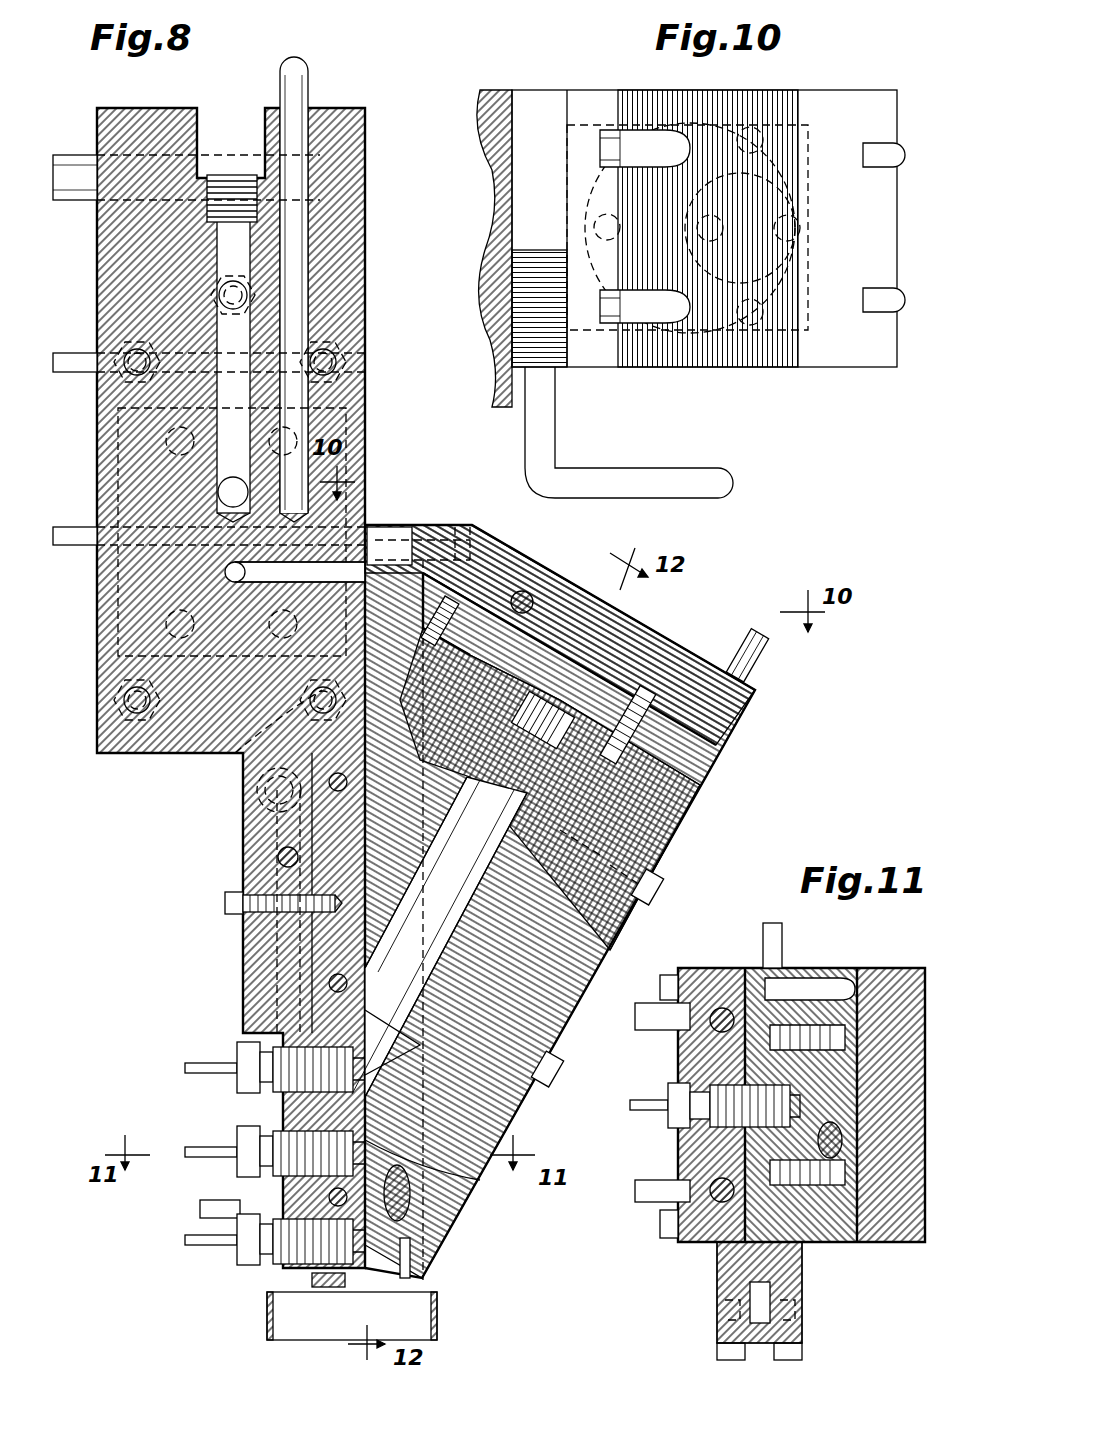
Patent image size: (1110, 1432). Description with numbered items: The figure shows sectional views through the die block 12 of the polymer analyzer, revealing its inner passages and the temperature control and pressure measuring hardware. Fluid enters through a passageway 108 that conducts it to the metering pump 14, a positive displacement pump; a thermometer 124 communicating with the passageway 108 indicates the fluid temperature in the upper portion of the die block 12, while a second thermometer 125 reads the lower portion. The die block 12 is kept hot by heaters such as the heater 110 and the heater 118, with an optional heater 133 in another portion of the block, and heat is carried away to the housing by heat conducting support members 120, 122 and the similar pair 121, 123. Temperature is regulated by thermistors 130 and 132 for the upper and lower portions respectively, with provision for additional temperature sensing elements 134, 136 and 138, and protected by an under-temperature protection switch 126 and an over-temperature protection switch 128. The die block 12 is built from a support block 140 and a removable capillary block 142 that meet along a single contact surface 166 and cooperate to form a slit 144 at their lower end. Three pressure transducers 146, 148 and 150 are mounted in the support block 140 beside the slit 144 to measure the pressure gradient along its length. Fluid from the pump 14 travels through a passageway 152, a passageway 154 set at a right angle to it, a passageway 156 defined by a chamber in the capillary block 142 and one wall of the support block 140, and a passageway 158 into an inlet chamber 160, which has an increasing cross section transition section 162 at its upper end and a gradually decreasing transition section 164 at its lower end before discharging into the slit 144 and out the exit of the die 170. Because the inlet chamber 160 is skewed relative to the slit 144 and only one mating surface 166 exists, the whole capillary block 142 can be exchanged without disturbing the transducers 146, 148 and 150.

In FIG. 8, the die block 12 is at (128, 850).
In FIG. 10, the die block 12 is at (600, 40).
In FIG. 11, the die block 12 is at (645, 1268).
In FIG. 8, the metering pump 14 is at (345, 422).
In FIG. 8, the passageway 108 is at (218, 470).
In FIG. 8, the heater 110 is at (70, 160).
In FIG. 8, the heater 118 is at (265, 942).
In FIG. 11, the heater 118 is at (652, 1202).
In FIG. 8, the support member 120 is at (126, 350).
In FIG. 8, the support member 121 is at (346, 348).
In FIG. 8, the support member 122 is at (120, 700).
In FIG. 8, the support member 123 is at (205, 753).
In FIG. 8, the thermometer 124 is at (306, 72).
In FIG. 8, the thermometer 125 is at (400, 1192).
In FIG. 10, the thermometer 125 is at (650, 482).
In FIG. 11, the thermometer 125 is at (845, 1140).
In FIG. 8, the under-temperature protection switch 126 is at (208, 295).
In FIG. 8, the over-temperature protection switch 128 is at (260, 828).
In FIG. 8, the thermistor 130 is at (88, 548).
In FIG. 8, the thermistor 132 is at (330, 1197).
In FIG. 11, the thermistor 132 is at (775, 925).
In FIG. 8, the heater 133 is at (762, 652).
In FIG. 10, the heater 133 is at (900, 148).
In FIG. 8, the temperature sensing element 134 is at (88, 374).
In FIG. 8, the temperature sensing element 136 is at (332, 800).
In FIG. 8, the temperature sensing element 138 is at (330, 983).
In FIG. 8, the support block 140 is at (128, 757).
In FIG. 10, the support block 140 is at (492, 207).
In FIG. 11, the support block 140 is at (725, 1258).
In FIG. 8, the capillary block 142 is at (710, 745).
In FIG. 10, the capillary block 142 is at (872, 362).
In FIG. 11, the capillary block 142 is at (905, 975).
In FIG. 8, the slit 144 is at (425, 1175).
In FIG. 11, the slit 144 is at (800, 1090).
In FIG. 8, the pressure transducer 146 is at (235, 1052).
In FIG. 8, the pressure transducer 148 is at (235, 1132).
In FIG. 11, the pressure transducer 148 is at (668, 1127).
In FIG. 8, the pressure transducer 150 is at (232, 1264).
In FIG. 8, the passageway 152 is at (225, 572).
In FIG. 8, the passageway 154 is at (350, 530).
In FIG. 8, the passageway 156 is at (400, 562).
In FIG. 8, the passageway 158 is at (470, 660).
In FIG. 8, the inlet chamber 160 is at (460, 903).
In FIG. 8, the transition section 162 is at (520, 785).
In FIG. 8, the transition section 164 is at (440, 1010).
In FIG. 8, the contact surface 166 is at (372, 828).
In FIG. 10, the contact surface 166 is at (520, 135).
In FIG. 11, the contact surface 166 is at (812, 1022).
In FIG. 8, the die 170 is at (368, 1273).